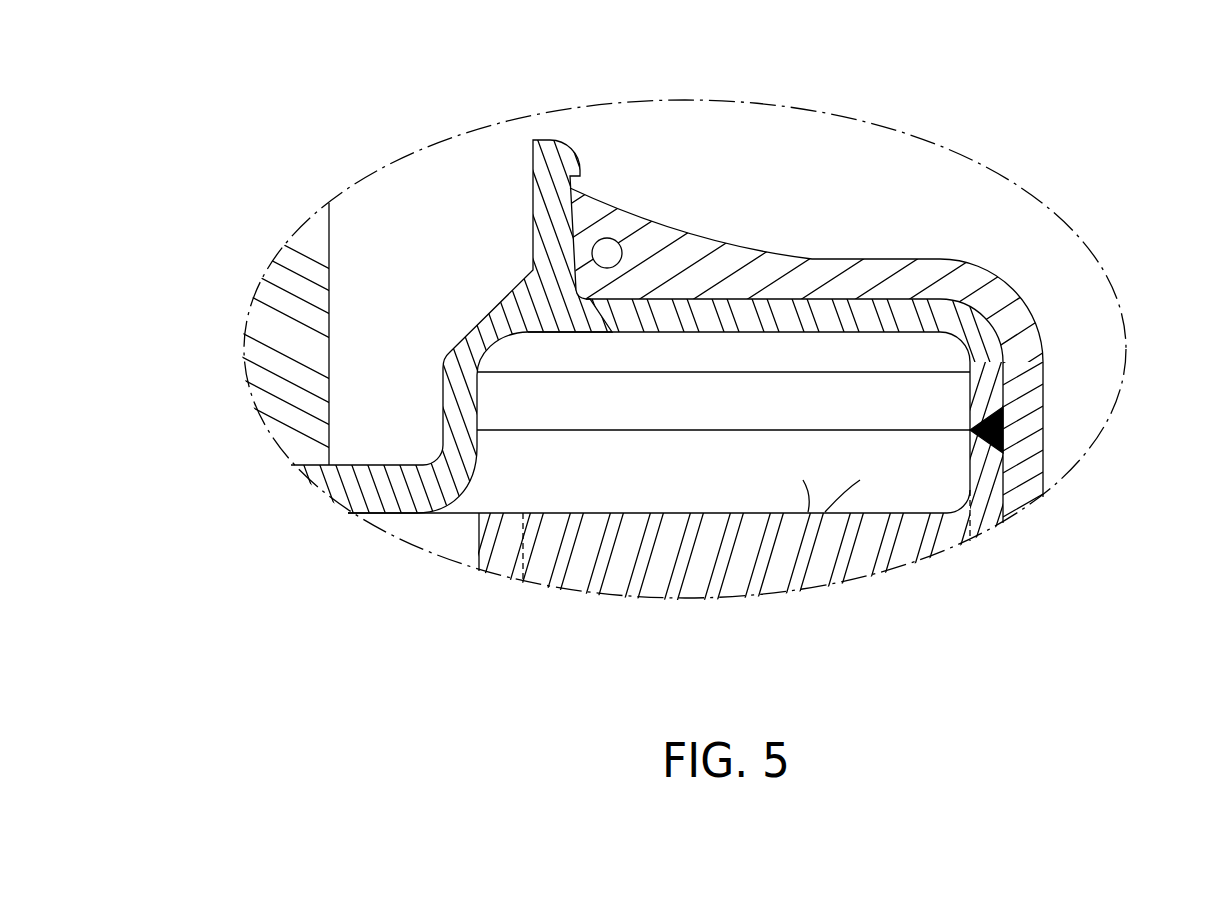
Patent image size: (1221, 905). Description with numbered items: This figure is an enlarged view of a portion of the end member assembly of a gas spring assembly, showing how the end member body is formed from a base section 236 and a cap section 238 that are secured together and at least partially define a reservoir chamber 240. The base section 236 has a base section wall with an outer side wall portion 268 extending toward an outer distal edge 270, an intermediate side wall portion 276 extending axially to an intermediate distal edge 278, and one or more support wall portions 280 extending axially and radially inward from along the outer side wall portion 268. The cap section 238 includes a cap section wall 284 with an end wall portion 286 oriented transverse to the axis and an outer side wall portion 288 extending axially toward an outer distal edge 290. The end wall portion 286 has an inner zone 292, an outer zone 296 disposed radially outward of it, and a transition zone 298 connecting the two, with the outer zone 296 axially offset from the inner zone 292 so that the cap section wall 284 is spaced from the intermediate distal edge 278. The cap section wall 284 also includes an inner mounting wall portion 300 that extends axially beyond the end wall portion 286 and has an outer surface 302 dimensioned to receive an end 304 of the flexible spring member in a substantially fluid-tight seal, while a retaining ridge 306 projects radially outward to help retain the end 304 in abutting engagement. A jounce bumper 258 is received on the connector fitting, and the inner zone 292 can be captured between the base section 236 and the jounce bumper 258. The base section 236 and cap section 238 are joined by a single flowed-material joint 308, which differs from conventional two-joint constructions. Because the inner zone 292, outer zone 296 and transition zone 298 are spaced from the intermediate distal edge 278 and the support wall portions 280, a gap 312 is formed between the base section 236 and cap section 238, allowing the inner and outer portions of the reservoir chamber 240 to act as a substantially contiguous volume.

The base section 236 is at (836, 592).
The cap section 238 is at (837, 288).
The reservoir chamber 240 is at (885, 343).
The jounce bumper 258 is at (273, 333).
The outer side wall portion 268 is at (987, 517).
The outer distal edge 270 is at (982, 465).
The intermediate side wall portion 276 is at (503, 563).
The intermediate distal edge 278 is at (503, 523).
The support wall portion 280 is at (704, 565).
The cap section wall 284 is at (750, 292).
The end wall portion 286 is at (623, 320).
The outer side wall portion 288 is at (980, 372).
The outer distal edge 290 is at (990, 397).
The inner zone 292 is at (347, 497).
The outer zone 296 is at (793, 320).
The transition zone 298 is at (463, 347).
The inner mounting wall portion 300 is at (548, 218).
The outer surface 302 is at (572, 185).
The end of flexible spring member 304 is at (703, 212).
The retaining ridge 306 is at (586, 188).
The flowed-material joint 308 is at (1014, 431).
The gap 312 is at (481, 486).